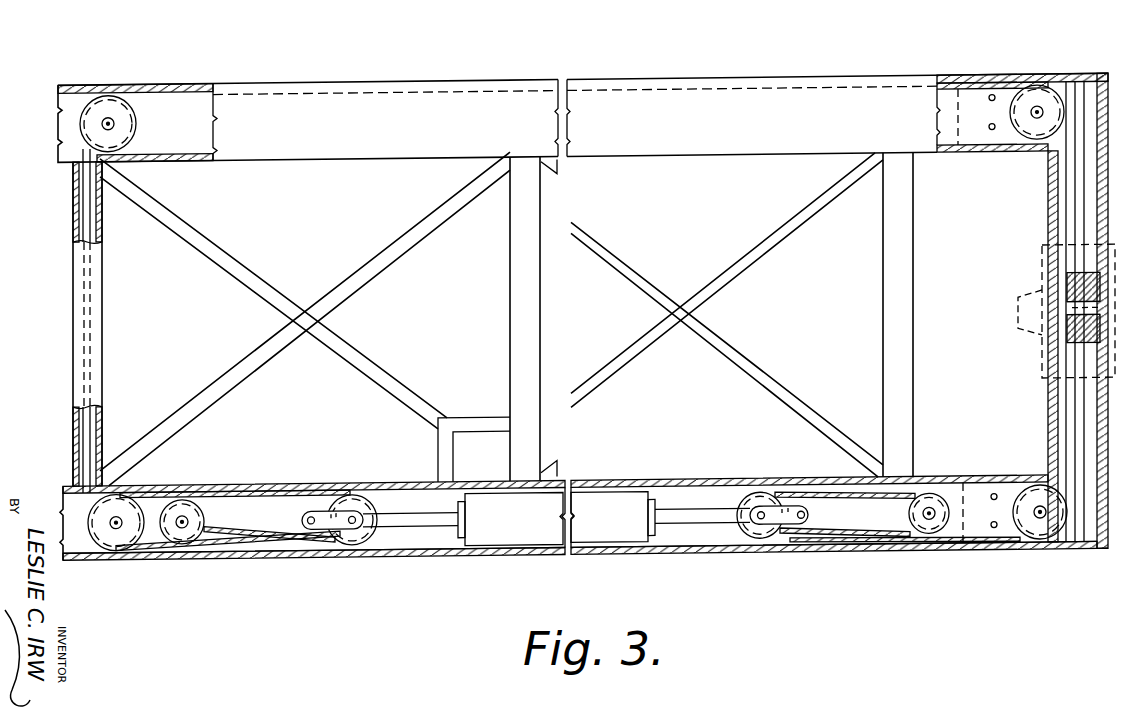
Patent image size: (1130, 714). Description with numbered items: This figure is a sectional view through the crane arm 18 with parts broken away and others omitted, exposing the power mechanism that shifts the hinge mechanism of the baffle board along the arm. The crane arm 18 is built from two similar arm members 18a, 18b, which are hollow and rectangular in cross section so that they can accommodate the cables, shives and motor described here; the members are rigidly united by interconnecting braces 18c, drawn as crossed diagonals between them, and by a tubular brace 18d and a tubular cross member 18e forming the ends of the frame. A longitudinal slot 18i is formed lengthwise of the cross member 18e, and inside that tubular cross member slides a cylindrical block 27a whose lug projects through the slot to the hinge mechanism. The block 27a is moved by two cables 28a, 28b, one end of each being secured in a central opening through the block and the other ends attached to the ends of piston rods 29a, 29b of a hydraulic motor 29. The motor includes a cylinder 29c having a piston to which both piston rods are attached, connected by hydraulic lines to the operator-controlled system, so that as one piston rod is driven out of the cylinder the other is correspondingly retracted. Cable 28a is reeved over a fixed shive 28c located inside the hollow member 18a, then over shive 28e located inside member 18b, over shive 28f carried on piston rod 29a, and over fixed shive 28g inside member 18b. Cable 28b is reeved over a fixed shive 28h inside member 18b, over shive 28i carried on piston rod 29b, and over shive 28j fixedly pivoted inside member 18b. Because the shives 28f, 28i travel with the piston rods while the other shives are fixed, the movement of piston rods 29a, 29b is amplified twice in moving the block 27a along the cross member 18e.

The crane arm 18 is at (702, 561).
The arm member 18a is at (360, 86).
The arm member 18b is at (208, 561).
The interconnecting braces 18c is at (347, 287).
The tubular brace 18d is at (104, 302).
The tubular cross member 18e is at (1050, 219).
The longitudinal slot 18i is at (1077, 97).
The cylindrical block 27a is at (1072, 293).
The cable 28a is at (134, 134).
The cable 28b is at (1066, 411).
The fixed shive 28c is at (1012, 121).
The shive 28e is at (113, 541).
The shive 28f is at (377, 550).
The fixed shive 28g is at (205, 528).
The fixed shive 28h is at (1038, 541).
The shive 28i is at (760, 501).
The shive 28j is at (936, 541).
The hydraulic motor 29 is at (598, 499).
The piston rod 29a is at (322, 534).
The piston rod 29b is at (782, 541).
The cylinder 29c is at (548, 551).